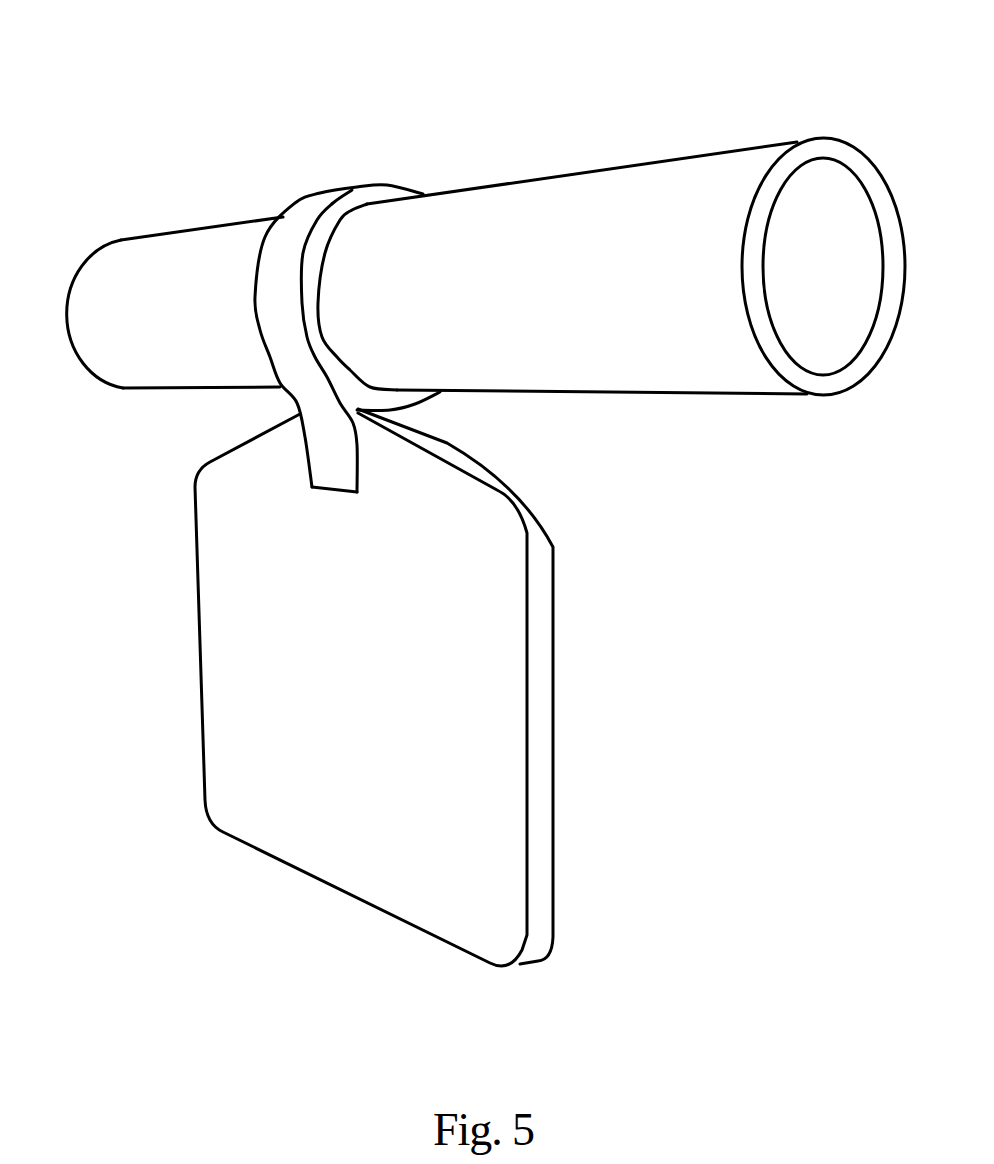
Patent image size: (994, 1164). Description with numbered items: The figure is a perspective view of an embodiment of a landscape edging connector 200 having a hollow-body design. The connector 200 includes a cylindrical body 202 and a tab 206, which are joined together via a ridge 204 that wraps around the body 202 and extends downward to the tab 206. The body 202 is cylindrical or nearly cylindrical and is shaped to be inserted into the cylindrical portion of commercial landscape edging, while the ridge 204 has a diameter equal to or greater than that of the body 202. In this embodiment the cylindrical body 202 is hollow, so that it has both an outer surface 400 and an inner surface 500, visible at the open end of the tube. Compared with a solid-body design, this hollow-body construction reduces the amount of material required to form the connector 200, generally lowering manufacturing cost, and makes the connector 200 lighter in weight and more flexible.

The landscape edging connector 200 is at (443, 62).
The body 202 is at (665, 188).
The ridge 204 is at (307, 220).
The tab 206 is at (368, 699).
The outer surface 400 is at (815, 158).
The inner surface 500 is at (841, 284).